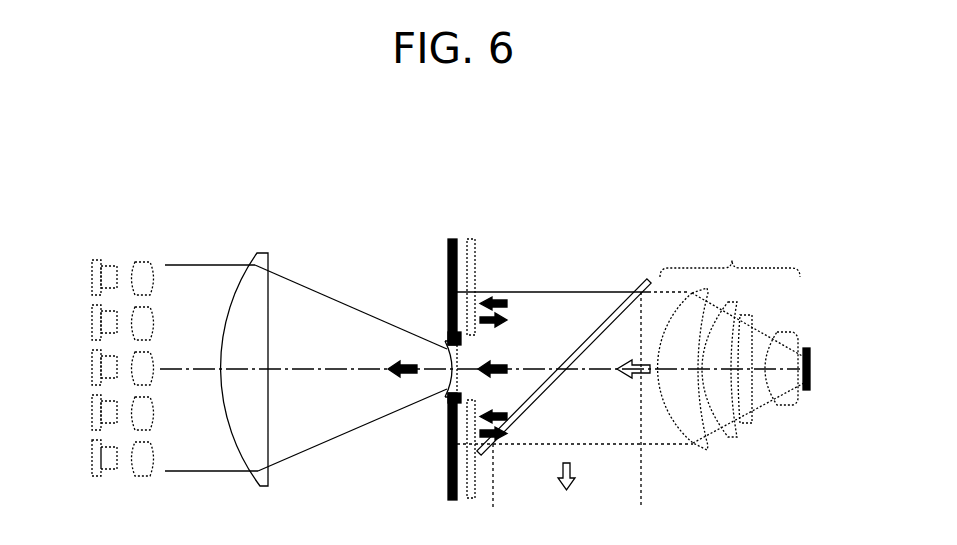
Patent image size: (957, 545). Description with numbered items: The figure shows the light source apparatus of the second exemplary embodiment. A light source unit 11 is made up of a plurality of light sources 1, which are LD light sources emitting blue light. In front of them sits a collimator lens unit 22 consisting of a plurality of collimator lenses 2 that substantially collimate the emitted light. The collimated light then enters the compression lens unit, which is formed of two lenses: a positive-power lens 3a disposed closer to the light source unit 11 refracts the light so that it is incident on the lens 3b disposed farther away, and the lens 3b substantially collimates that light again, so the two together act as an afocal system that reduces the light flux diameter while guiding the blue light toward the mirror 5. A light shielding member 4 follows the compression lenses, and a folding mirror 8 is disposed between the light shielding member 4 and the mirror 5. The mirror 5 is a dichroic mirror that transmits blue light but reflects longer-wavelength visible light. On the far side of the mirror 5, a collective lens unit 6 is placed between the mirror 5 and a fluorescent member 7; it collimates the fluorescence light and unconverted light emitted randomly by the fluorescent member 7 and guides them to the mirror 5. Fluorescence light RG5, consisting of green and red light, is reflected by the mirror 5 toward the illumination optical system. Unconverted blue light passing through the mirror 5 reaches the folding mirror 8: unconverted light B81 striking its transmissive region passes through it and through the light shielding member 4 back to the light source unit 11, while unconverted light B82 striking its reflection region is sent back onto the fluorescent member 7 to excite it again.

The light sources 1 is at (87, 340).
The light source unit 11 is at (106, 262).
The collimator lenses 2 is at (167, 345).
The collimator lens unit 22 is at (143, 264).
The lens 3a is at (268, 255).
The lens 3b is at (445, 340).
The light shielding member 4 is at (452, 239).
The folding mirror 8 is at (471, 239).
The unconverted light B81 is at (405, 380).
The unconverted light B82 is at (500, 297).
The mirror 5 is at (585, 340).
The collective lens unit 6 is at (731, 340).
The fluorescent member 7 is at (810, 352).
The fluorescence light RG5 is at (575, 491).